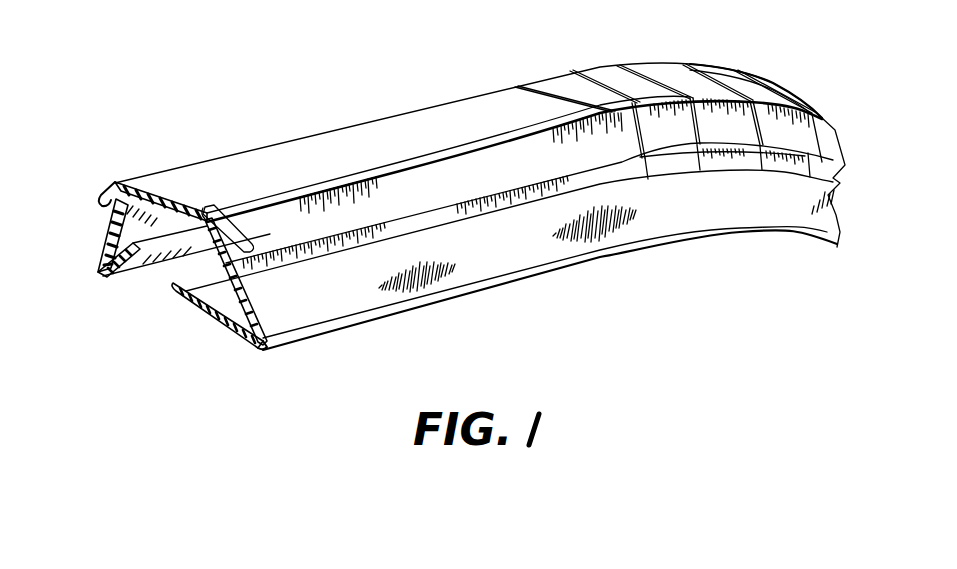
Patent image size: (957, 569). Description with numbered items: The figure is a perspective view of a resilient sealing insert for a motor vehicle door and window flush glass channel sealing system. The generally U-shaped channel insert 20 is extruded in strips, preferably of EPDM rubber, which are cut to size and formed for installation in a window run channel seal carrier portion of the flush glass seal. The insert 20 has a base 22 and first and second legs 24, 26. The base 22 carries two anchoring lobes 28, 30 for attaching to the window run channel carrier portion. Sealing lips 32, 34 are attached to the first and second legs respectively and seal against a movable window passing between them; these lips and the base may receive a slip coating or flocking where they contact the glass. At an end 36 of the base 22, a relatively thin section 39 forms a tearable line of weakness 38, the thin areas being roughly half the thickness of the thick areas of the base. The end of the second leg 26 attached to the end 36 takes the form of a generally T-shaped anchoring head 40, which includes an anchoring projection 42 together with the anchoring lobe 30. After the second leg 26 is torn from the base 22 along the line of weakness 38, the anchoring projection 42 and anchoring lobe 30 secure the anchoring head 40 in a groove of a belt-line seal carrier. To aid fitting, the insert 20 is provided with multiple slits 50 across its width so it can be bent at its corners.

The channel insert 20 is at (318, 78).
The base 22 is at (423, 120).
The first leg 24 is at (100, 250).
The second leg 26 is at (262, 331).
The anchoring lobe 28 is at (100, 201).
The anchoring lobe 30 is at (239, 238).
The sealing lip 32 is at (133, 268).
The sealing lip 34 is at (223, 340).
The end of the base 36 is at (161, 195).
The tearable line of weakness 38 is at (440, 150).
The thin section 39 is at (204, 208).
The anchoring head 40 is at (229, 205).
The anchoring projection 42 is at (212, 224).
The slits 50 is at (572, 71).